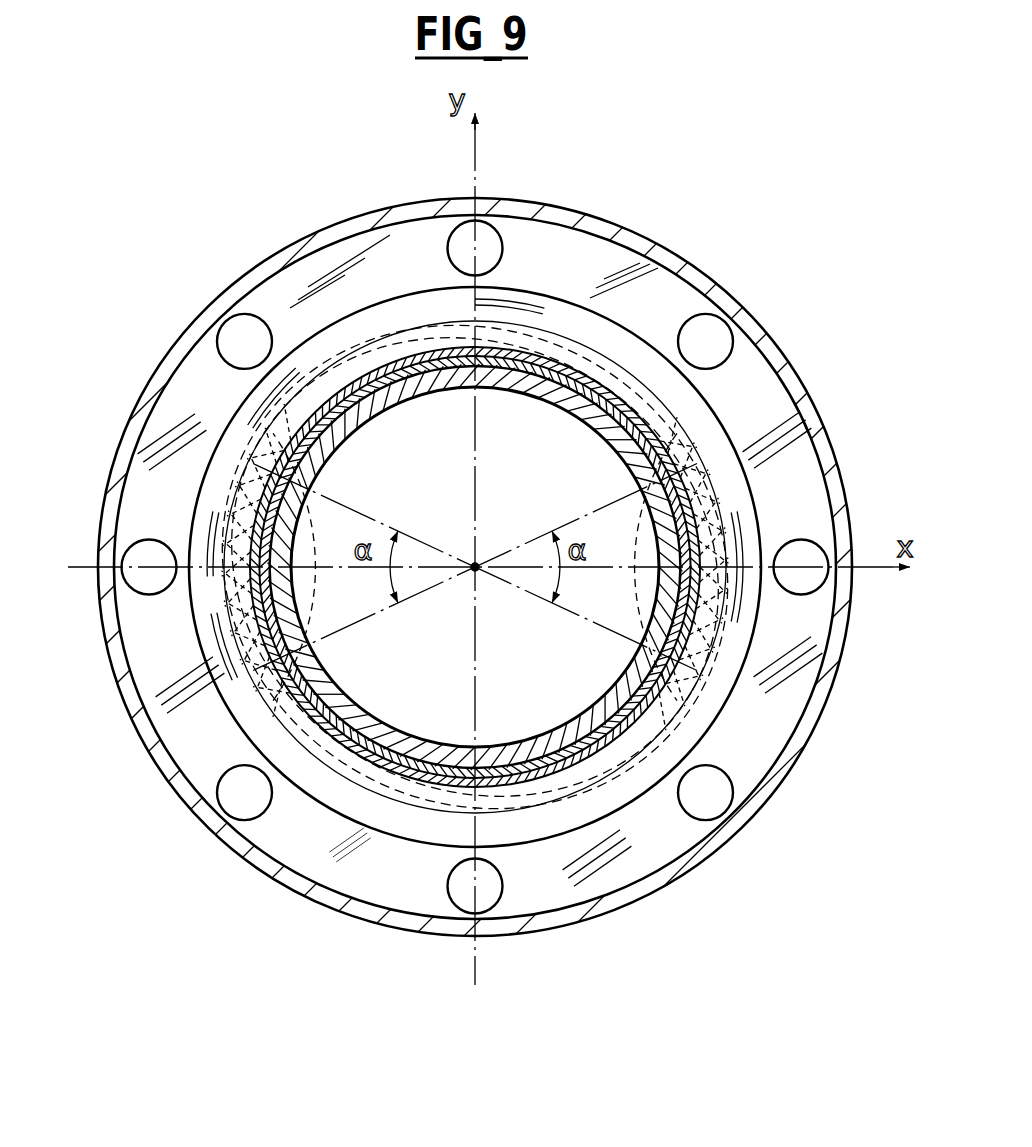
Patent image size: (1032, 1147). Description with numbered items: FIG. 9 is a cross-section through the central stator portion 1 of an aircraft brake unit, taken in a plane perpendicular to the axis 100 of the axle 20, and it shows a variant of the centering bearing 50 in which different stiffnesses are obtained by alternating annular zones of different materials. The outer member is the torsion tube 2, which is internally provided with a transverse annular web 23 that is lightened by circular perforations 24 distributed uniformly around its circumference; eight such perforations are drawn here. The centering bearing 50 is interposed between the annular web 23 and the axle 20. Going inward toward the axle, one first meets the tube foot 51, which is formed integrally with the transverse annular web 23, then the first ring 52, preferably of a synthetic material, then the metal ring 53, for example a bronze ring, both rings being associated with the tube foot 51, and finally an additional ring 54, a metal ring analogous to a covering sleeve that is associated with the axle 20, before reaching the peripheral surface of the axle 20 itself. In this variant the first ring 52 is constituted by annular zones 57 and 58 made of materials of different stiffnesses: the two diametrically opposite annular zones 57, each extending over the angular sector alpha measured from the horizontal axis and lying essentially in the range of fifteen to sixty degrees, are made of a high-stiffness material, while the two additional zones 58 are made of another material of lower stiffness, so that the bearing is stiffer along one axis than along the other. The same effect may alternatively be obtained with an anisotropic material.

The central stator portion 1 is at (614, 212).
The torsion tube 2 is at (686, 268).
The axle 20 is at (437, 745).
The transverse annular web 23 is at (747, 380).
The circular perforations 24 is at (500, 224).
The centering bearing 50 is at (607, 312).
The tube foot 51 is at (642, 350).
The first ring 52 is at (700, 437).
The metal ring 53 is at (292, 676).
The additional ring 54 is at (343, 726).
The annular zones of high stiffness 57 is at (723, 500).
The additional annular zones of lower stiffness 58 is at (392, 322).
The axis 100 is at (480, 568).